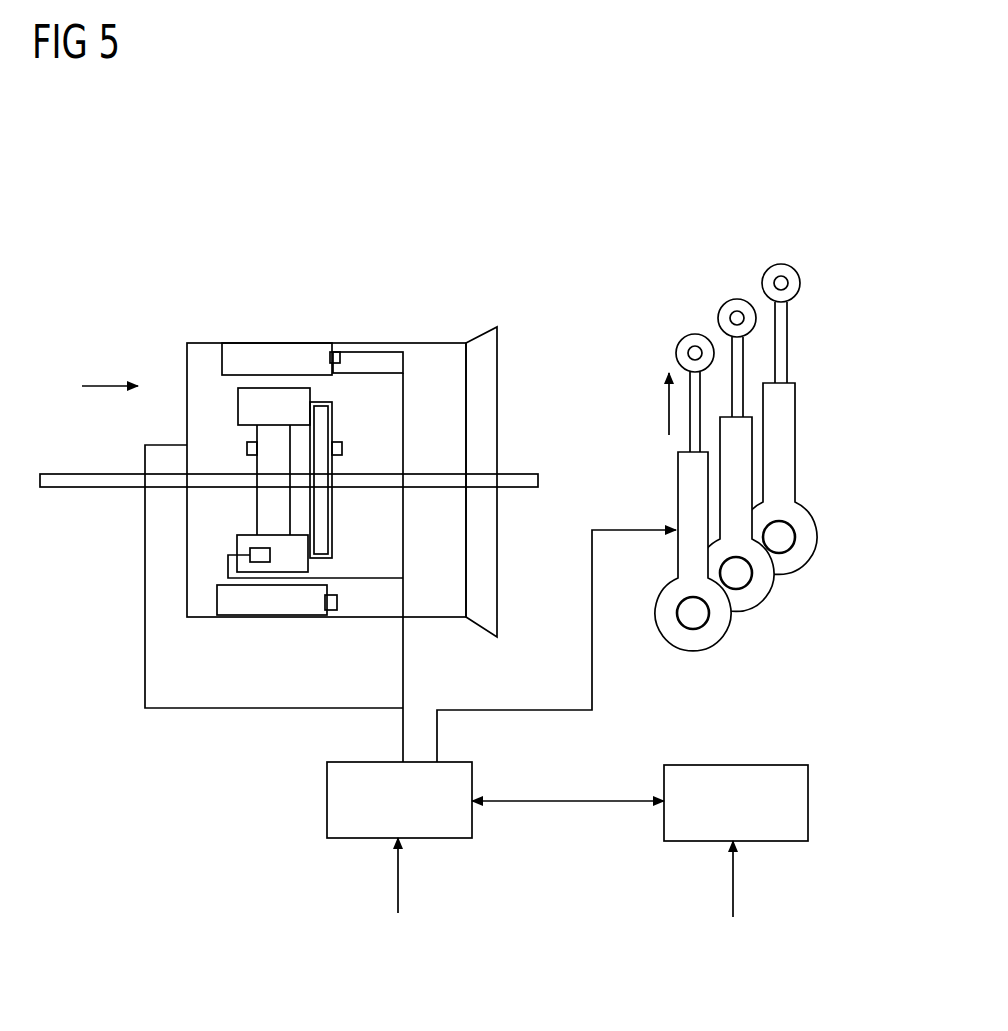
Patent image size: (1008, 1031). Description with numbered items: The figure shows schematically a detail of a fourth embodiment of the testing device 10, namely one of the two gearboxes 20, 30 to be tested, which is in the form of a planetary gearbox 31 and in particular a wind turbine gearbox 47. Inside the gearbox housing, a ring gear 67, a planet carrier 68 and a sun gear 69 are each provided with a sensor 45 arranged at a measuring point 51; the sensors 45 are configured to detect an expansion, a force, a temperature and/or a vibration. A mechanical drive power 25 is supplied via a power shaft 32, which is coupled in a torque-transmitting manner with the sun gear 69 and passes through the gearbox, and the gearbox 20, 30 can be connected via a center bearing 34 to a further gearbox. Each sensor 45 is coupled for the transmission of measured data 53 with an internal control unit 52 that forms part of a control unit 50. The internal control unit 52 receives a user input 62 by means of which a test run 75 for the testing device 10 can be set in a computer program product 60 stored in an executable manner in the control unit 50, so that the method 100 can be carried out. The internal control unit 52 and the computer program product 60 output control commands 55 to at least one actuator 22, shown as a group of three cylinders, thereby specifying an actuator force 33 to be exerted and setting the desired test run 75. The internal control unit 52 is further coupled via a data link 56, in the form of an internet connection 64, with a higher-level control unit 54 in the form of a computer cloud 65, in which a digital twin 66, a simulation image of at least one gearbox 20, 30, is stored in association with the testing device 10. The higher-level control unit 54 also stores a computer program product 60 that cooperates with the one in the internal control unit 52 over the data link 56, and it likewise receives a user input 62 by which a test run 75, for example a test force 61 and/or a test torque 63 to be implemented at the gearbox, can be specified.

The method 100 is at (588, 123).
The testing device 10 is at (193, 282).
The gearbox 20 is at (337, 510).
The gearbox 30 is at (375, 343).
The planetary gearbox 31 is at (277, 321).
The wind turbine gearbox 47 is at (267, 357).
The center bearing 34 is at (477, 328).
The power shaft 32 is at (53, 472).
The mechanical drive power 25 is at (100, 385).
The sun gear 69 is at (268, 512).
The planet carrier 68 is at (333, 507).
The ring gear 67 is at (230, 597).
The measuring point 51 is at (337, 510).
The sensor 45 is at (250, 447).
The measured data 53 is at (144, 668).
The test run 75 is at (738, 222).
The actuator 22 is at (795, 435).
The actuator force 33 is at (669, 410).
The control commands 55 is at (628, 535).
The control unit 50 is at (466, 766).
The internal control unit 52 is at (327, 795).
The computer program product 60 is at (466, 766).
The higher-level control unit 54 is at (740, 766).
The computer cloud 65 is at (740, 766).
The digital twin 66 is at (732, 765).
The data link 56 is at (568, 841).
The internet connection 64 is at (572, 802).
The user input 62 is at (397, 883).
The test force 61 is at (811, 879).
The test torque 63 is at (733, 885).